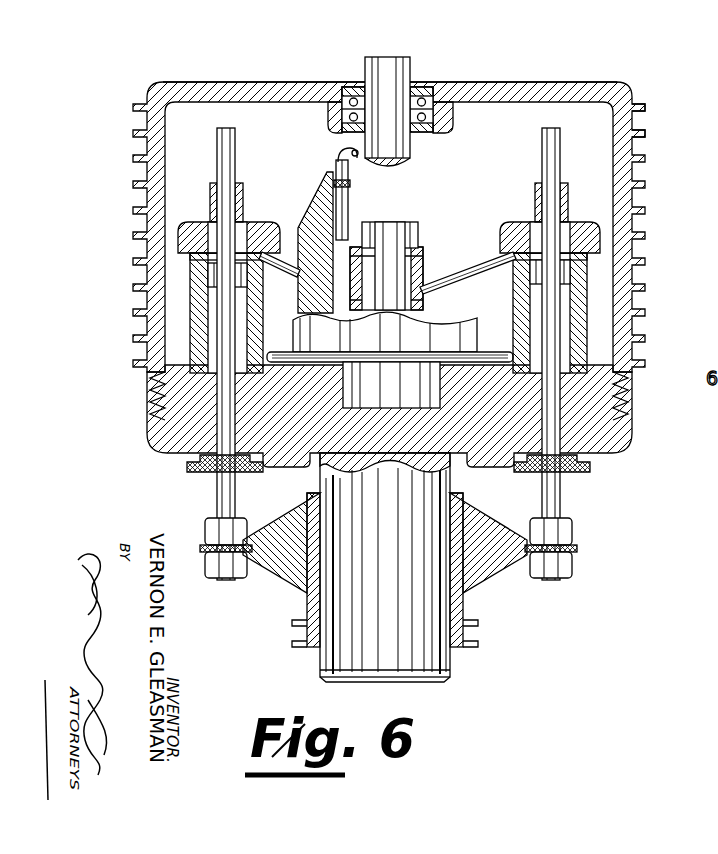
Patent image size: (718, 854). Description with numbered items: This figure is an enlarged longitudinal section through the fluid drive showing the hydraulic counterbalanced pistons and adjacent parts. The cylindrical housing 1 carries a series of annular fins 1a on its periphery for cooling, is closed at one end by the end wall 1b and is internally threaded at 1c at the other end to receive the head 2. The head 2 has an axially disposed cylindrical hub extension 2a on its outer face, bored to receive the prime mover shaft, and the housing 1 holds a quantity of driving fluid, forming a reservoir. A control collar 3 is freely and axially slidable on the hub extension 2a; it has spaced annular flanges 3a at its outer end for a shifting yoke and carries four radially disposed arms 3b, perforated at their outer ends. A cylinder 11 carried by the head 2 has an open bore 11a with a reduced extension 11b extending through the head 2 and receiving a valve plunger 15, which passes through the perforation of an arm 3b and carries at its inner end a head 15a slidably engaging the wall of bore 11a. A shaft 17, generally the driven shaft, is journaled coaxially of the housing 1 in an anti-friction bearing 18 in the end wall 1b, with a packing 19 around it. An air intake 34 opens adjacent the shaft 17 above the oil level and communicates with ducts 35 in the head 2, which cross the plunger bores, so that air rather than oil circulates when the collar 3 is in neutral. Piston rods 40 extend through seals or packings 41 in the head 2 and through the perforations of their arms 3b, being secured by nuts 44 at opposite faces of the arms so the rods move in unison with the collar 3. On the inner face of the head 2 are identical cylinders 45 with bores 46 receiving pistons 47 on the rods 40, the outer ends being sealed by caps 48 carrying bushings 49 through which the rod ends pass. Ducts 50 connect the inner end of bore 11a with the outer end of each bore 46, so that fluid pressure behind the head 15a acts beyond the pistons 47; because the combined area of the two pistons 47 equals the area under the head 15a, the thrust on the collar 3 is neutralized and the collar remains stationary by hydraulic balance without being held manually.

The cylindrical housing 1 is at (640, 212).
The annular fins 1a is at (645, 133).
The closed end wall 1b is at (525, 82).
The internal threads 1c is at (632, 385).
The head 2 is at (612, 438).
The cylindrical hub extension 2a is at (420, 680).
The control collar 3 is at (470, 610).
The annular flanges 3a is at (292, 637).
The radially disposed arms 3b is at (290, 580).
The cylinder 11 is at (425, 265).
The open bore 11a is at (425, 245).
The reduced bore extension 11b is at (420, 303).
The valve plunger 15 is at (415, 238).
The plunger head 15a is at (383, 233).
The shaft 17 is at (365, 72).
The anti-friction bearing 18 is at (433, 125).
The packing 19 is at (437, 82).
The air intake 34 is at (338, 157).
The ducts 35 is at (348, 330).
The piston rods 40 is at (217, 495).
The seals or packings 41 is at (195, 466).
The nuts 44 is at (205, 565).
The cylinders 45 is at (200, 302).
The cylinder bores 46 is at (205, 280).
The pistons 47 is at (192, 258).
The caps 48 is at (250, 232).
The bushings 49 is at (243, 200).
The ducts 50 is at (333, 210).